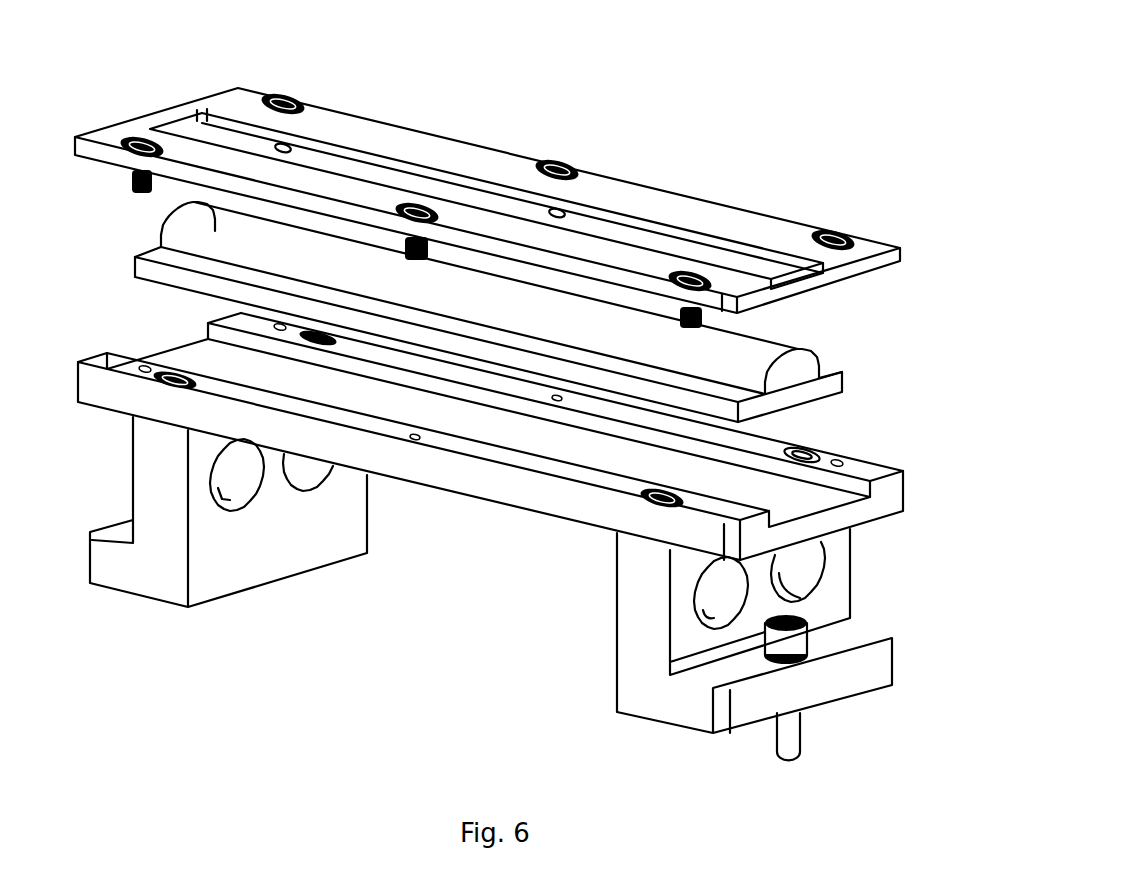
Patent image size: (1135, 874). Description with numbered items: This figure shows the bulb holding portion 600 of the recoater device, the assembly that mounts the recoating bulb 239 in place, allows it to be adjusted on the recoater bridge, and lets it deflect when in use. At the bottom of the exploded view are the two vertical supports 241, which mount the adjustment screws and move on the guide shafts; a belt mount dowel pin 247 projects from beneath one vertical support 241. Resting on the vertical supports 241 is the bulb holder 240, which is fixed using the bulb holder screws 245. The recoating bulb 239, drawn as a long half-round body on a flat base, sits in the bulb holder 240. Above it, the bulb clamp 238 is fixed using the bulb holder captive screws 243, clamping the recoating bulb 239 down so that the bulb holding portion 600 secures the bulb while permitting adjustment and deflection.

The bulb holding portion 600 is at (566, 100).
The bulb clamp 238 is at (487, 189).
The recoating bulb 239 is at (763, 357).
The bulb holder 240 is at (520, 458).
The vertical support 241 is at (827, 595).
The bulb holder captive screw 243 is at (288, 95).
The bulb holder screw 245 is at (650, 503).
The belt mount dowel pin 247 is at (783, 730).